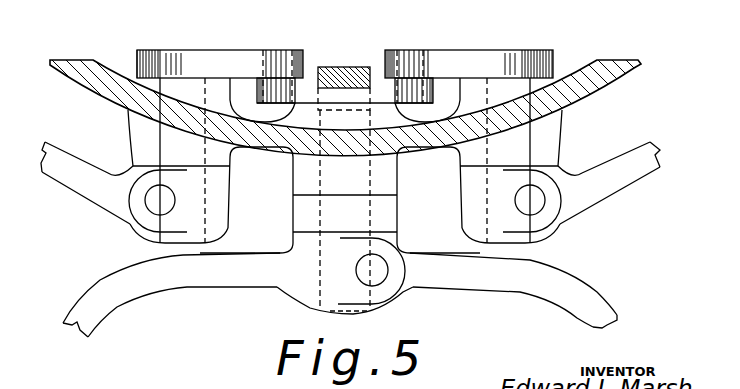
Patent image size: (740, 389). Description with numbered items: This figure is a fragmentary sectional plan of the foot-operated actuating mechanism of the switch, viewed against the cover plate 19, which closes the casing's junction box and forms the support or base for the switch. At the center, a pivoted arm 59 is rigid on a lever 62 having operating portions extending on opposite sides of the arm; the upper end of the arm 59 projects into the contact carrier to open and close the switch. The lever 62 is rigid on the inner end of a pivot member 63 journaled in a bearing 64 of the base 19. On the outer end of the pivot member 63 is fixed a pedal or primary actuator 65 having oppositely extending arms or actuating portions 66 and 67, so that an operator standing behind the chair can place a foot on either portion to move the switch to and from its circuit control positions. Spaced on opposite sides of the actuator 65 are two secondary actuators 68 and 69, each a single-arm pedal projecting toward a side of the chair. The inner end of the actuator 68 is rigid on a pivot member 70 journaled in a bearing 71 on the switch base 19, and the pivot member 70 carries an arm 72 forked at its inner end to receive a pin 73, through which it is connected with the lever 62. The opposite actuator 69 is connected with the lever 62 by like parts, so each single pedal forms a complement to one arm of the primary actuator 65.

The cover plate 19 is at (582, 70).
The pivoted arm 59 is at (345, 66).
The lever 62 is at (308, 82).
The pivot member 63 is at (372, 180).
The bearing 64 is at (298, 166).
The pedal or actuator 65 is at (295, 272).
The actuating portion 66 is at (128, 295).
The actuating portion 67 is at (588, 285).
The secondary actuator 68 is at (65, 172).
The secondary actuator 69 is at (643, 168).
The pivot member 70 is at (160, 127).
The bearing 71 is at (142, 135).
The arm 72 is at (205, 50).
The pin 73 is at (264, 50).